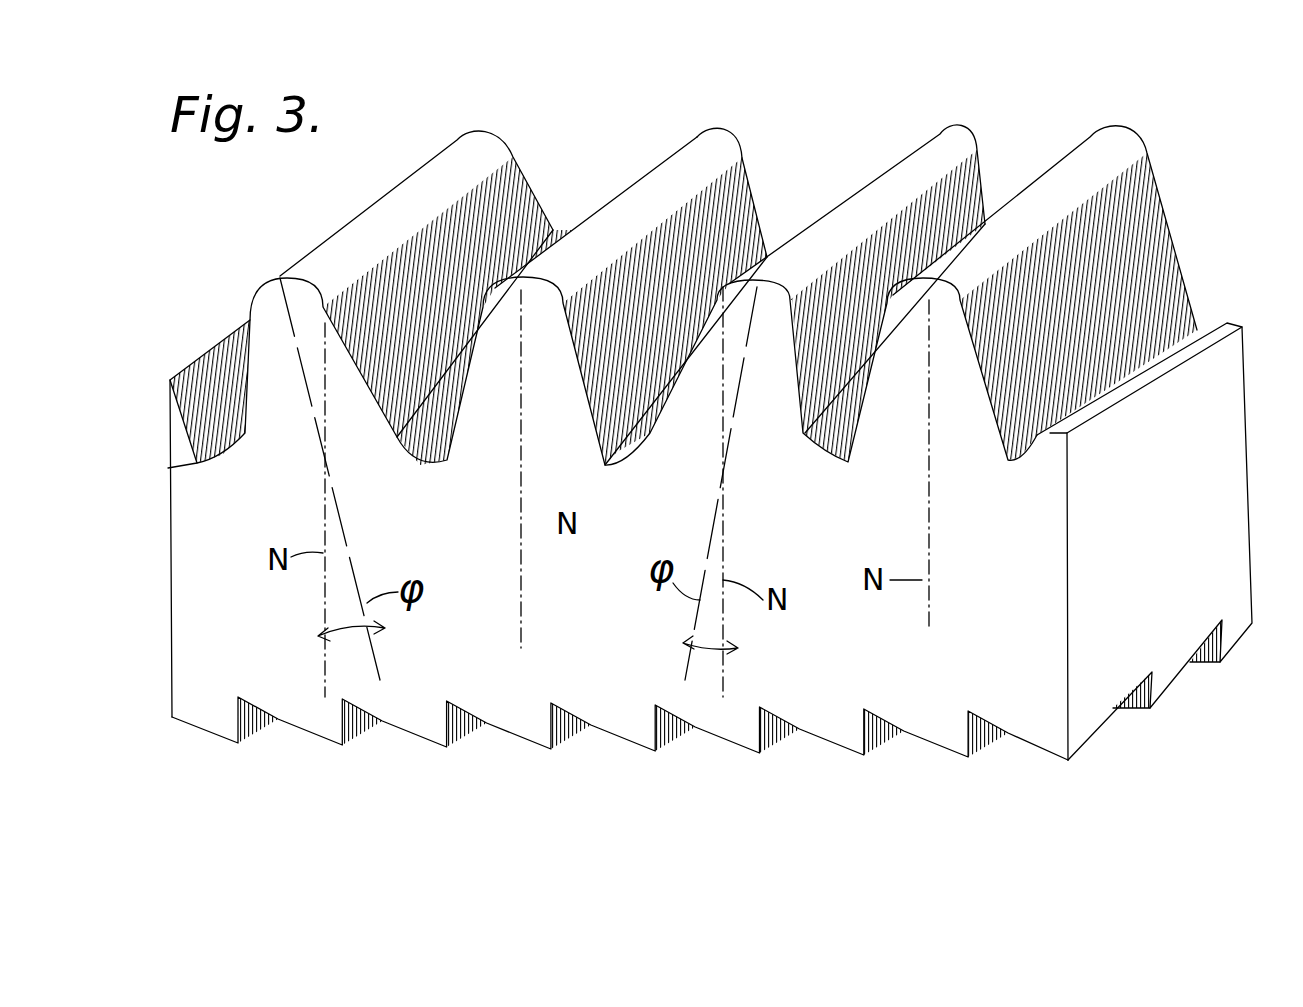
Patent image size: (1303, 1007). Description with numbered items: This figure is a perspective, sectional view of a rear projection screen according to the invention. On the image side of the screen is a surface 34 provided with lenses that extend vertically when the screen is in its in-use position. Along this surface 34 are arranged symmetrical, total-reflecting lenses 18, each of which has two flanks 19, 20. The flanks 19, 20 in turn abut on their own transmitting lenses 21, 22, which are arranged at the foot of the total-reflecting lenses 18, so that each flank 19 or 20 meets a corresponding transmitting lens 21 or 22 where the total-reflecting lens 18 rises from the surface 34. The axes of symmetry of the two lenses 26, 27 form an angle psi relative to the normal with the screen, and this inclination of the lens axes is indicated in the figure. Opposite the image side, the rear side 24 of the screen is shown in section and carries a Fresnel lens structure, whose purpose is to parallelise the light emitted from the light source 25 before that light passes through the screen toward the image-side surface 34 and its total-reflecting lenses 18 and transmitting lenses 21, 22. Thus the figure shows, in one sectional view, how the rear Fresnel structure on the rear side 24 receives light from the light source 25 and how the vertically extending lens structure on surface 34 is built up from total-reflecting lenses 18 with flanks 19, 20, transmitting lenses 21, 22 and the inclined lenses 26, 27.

The symmetrical, total-reflecting lens 18 is at (723, 200).
The flank 19 is at (643, 167).
The flank 20 is at (757, 212).
The transmitting lens 21 is at (198, 357).
The transmitting lens 22 is at (363, 360).
The rear side 24 is at (1093, 732).
The light source 25 is at (553, 757).
The lens 26 is at (510, 210).
The lens 27 is at (960, 200).
The surface provided with lenses 34 is at (468, 120).